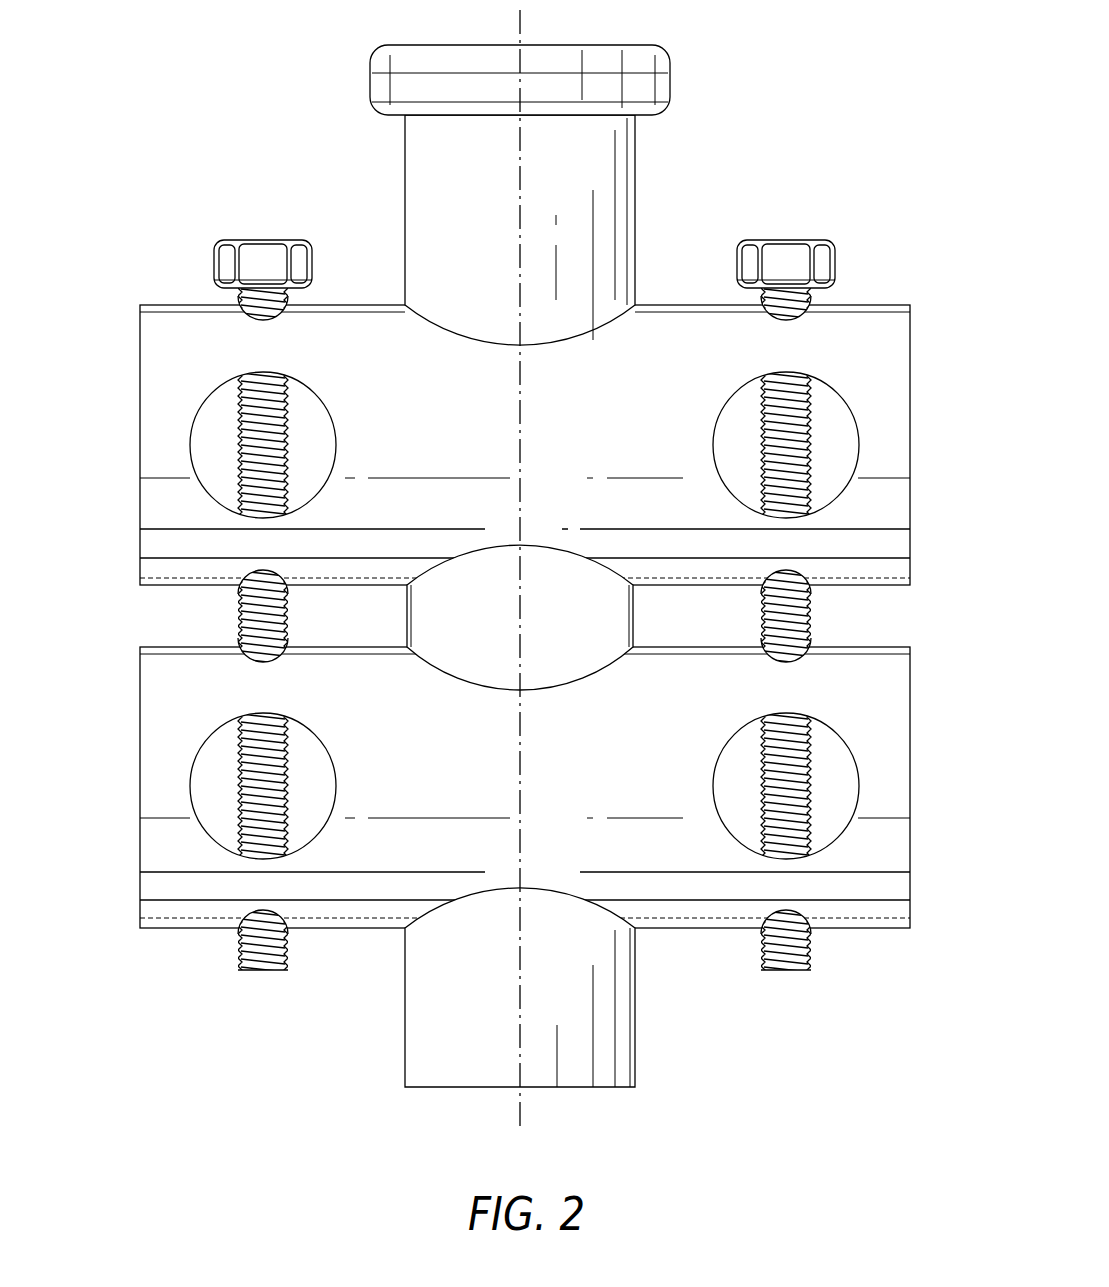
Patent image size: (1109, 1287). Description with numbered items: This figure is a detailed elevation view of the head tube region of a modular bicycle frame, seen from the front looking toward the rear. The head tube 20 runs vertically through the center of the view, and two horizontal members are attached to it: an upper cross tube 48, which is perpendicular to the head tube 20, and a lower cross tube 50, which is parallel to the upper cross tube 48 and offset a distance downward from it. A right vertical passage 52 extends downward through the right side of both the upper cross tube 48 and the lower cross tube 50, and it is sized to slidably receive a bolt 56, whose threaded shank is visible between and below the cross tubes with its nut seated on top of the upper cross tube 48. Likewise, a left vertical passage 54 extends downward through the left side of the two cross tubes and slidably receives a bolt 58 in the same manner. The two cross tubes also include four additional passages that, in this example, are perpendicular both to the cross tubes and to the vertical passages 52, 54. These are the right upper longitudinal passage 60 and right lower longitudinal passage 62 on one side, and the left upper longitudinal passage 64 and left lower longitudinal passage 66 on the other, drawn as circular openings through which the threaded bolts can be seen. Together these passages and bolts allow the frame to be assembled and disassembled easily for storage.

The head tube 20 is at (622, 172).
The upper cross tube 48 is at (162, 337).
The lower cross tube 50 is at (158, 884).
The right vertical passage 52 is at (242, 318).
The left vertical passage 54 is at (810, 318).
The bolt 56 is at (262, 240).
The bolt 58 is at (790, 240).
The right upper longitudinal passage 60 is at (188, 445).
The right lower longitudinal passage 62 is at (188, 787).
The left upper longitudinal passage 64 is at (859, 445).
The left lower longitudinal passage 66 is at (859, 787).